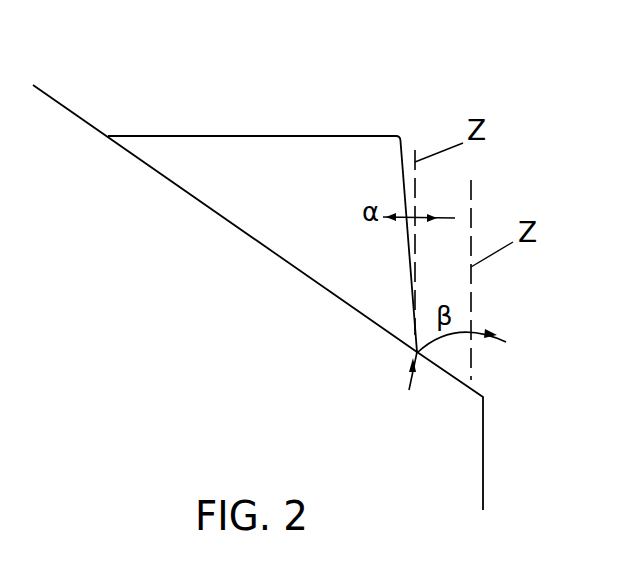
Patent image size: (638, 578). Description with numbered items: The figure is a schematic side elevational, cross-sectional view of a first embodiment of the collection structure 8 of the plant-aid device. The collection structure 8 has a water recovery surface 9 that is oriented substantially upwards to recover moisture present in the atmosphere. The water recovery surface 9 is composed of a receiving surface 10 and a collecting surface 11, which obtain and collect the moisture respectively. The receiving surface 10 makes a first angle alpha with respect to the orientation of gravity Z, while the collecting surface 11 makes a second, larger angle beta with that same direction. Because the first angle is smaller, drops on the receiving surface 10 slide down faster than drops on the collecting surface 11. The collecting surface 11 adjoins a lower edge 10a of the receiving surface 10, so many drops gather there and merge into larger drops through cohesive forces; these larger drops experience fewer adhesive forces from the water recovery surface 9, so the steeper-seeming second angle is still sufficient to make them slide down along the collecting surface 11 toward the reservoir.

The collection structure 8 is at (243, 101).
The water recovery surface 9 is at (72, 110).
The receiving surface 10 is at (403, 180).
The lower edge 10a is at (415, 354).
The collecting surface 11 is at (465, 388).